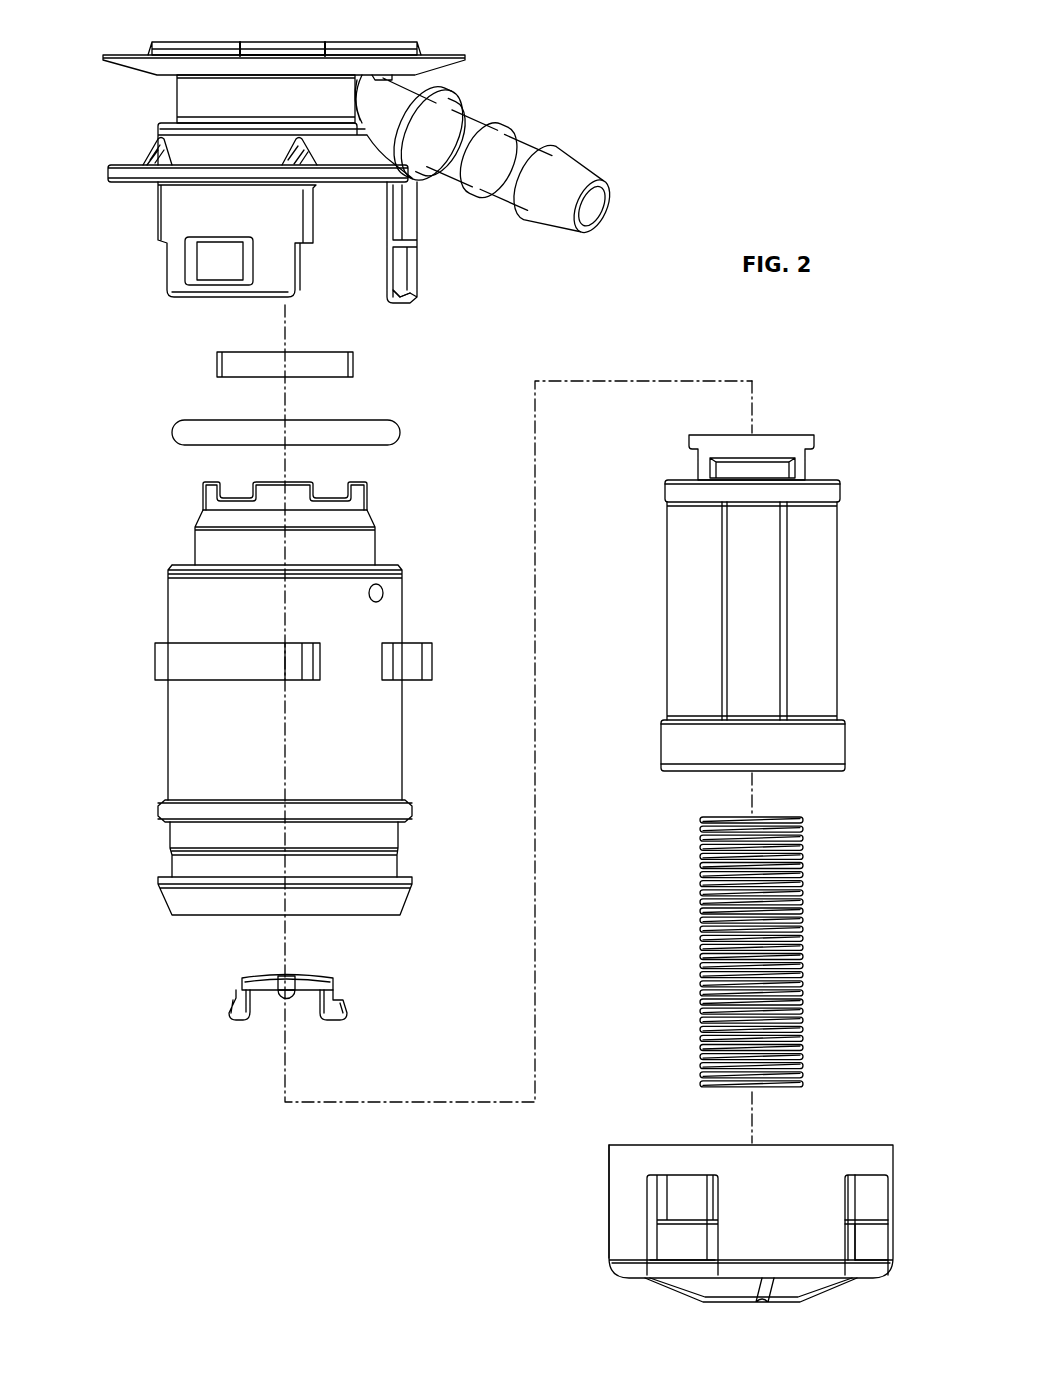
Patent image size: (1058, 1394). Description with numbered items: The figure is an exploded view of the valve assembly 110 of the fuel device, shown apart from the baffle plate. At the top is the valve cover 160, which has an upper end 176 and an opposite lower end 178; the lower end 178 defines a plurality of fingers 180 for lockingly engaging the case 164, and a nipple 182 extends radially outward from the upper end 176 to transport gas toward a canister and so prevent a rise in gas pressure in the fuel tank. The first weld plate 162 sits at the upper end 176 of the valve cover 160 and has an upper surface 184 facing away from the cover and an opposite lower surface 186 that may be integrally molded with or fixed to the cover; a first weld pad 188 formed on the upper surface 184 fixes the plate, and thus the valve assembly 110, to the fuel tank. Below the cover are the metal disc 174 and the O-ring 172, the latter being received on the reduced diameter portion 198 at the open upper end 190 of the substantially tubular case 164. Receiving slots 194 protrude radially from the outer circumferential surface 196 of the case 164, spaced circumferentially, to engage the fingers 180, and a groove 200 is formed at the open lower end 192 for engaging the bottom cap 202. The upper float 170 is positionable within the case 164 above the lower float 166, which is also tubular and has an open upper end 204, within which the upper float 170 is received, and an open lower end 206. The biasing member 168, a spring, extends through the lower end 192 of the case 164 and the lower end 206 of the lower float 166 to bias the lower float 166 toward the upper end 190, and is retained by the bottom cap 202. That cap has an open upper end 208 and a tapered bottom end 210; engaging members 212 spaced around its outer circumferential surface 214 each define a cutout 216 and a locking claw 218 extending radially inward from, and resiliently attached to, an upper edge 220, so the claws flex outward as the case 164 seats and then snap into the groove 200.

The valve assembly 110 is at (120, 463).
The valve cover 160 is at (331, 175).
The first weld plate 162 is at (339, 175).
The case 164 is at (270, 694).
The lower float 166 is at (794, 585).
The biasing member 168 is at (837, 945).
The upper float 170 is at (205, 1022).
The O-ring 172 is at (195, 418).
The metal disc 174 is at (228, 362).
The upper end 176 is at (173, 78).
The lower end 178 is at (408, 305).
The fingers 180 is at (180, 217).
The nipple 182 is at (527, 155).
The upper surface 184 is at (291, 52).
The lower surface 186 is at (213, 75).
The first weld pad 188 is at (378, 45).
The open upper end 190 is at (363, 485).
The open lower end 192 is at (370, 915).
The receiving slots 194 is at (162, 665).
The outer circumferential surface 196 is at (378, 745).
The reduced diameter portion 198 is at (180, 550).
The groove 200 is at (385, 862).
The bottom cap 202 is at (730, 1198).
The open upper end 204 is at (800, 435).
The open lower end 206 is at (822, 771).
The open upper end 208 is at (715, 1179).
The tapered bottom end 210 is at (793, 1290).
The engaging members 212 is at (877, 1188).
The outer circumferential surface 214 is at (627, 1170).
The cutout 216 is at (865, 1240).
The locking claw 218 is at (867, 1207).
The upper edge 220 is at (662, 1175).